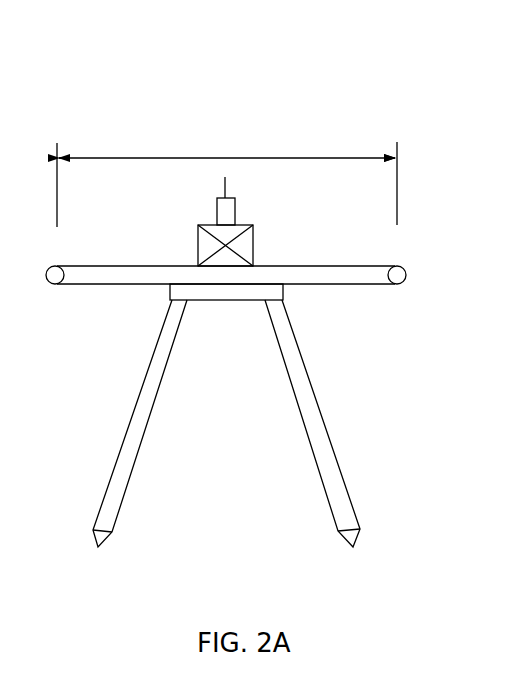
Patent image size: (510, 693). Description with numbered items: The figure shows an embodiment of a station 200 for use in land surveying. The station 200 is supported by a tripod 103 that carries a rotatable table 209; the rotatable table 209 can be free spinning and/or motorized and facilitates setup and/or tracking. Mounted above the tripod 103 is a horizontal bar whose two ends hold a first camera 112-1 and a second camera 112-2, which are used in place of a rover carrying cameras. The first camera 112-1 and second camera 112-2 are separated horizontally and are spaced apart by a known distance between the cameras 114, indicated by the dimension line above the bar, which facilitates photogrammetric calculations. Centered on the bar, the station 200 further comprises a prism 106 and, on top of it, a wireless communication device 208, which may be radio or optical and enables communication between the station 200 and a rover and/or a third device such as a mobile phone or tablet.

The station 200 is at (337, 111).
The known distance between the cameras 114 is at (225, 157).
The wireless communication device 208 is at (236, 212).
The prism 106 is at (198, 242).
The second camera 112-2 is at (57, 285).
The first camera 112-1 is at (393, 284).
The rotatable table 209 is at (283, 289).
The tripod 103 is at (110, 483).